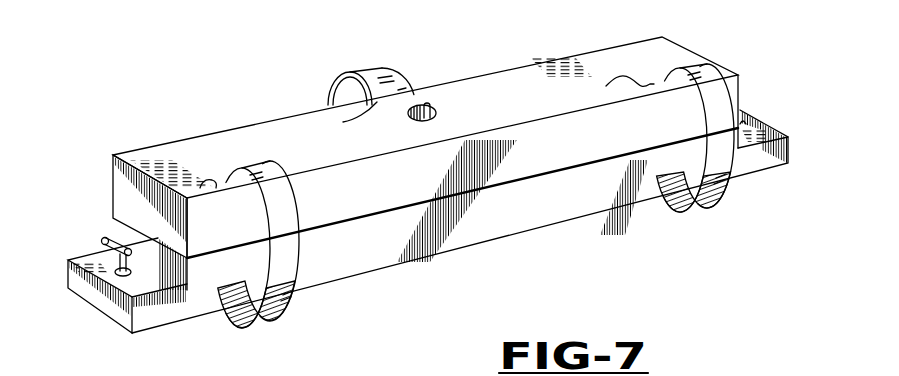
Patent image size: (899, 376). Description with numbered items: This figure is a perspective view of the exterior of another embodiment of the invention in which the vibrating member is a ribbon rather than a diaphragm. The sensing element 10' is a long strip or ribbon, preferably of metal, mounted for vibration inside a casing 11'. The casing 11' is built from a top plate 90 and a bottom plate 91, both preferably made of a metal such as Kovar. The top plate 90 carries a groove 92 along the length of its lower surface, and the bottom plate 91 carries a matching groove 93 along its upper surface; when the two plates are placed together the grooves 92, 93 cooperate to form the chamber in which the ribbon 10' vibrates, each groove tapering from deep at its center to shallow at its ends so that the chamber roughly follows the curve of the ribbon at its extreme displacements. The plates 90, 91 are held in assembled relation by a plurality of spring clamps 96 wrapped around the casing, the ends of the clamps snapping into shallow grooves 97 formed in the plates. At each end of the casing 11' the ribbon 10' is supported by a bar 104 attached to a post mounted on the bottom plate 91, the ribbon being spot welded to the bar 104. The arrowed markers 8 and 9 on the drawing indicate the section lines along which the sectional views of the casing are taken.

The sensing element 10' is at (110, 244).
The casing 11' is at (479, 68).
The top plate 90 is at (666, 48).
The bottom plate 91 is at (740, 170).
The groove 92 is at (150, 228).
The groove 93 is at (156, 236).
The spring clamps 96 is at (376, 70).
The shallow grooves 97 is at (343, 122).
The bar 104 is at (102, 238).
The section line for FIG. 8 is at (55, 290).
The section line for FIG. 9 is at (228, 68).